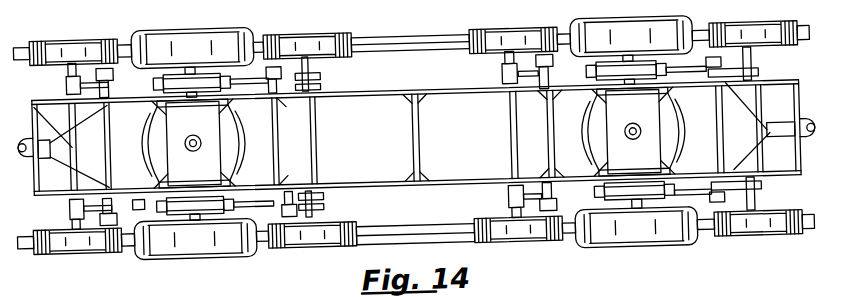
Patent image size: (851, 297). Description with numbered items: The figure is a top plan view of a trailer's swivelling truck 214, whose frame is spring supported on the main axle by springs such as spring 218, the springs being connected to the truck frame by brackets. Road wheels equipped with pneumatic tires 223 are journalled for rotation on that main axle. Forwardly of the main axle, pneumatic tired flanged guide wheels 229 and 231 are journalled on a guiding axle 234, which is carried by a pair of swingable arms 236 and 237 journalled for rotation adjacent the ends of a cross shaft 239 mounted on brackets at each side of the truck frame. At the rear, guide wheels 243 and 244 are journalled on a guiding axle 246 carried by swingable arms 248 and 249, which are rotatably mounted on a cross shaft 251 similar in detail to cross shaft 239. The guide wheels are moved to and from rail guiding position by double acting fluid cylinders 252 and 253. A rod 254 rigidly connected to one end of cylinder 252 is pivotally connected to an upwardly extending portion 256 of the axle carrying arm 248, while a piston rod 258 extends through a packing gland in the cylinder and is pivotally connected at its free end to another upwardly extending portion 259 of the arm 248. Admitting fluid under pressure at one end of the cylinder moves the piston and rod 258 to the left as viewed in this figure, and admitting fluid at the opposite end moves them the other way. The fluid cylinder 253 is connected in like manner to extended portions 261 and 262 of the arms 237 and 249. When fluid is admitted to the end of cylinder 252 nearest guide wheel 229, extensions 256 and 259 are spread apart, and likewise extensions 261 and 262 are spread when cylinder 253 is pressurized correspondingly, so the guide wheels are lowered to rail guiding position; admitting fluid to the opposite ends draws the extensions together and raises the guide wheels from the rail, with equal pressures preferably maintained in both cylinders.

The swivelling truck 214 is at (251, 92).
The spring 218 is at (129, 87).
The pneumatic tire 223 is at (175, 48).
The flanged guide wheel 229 is at (312, 232).
The flanged guide wheel 231 is at (311, 32).
The guiding axle 234 is at (318, 148).
The swingable arm 236 is at (321, 199).
The swingable arm 237 is at (324, 74).
The cross shaft 239 is at (313, 144).
The rear guide wheel 243 is at (67, 230).
The rear guide wheel 244 is at (42, 40).
The guiding axle 246 is at (79, 131).
The swingable arm 248 is at (80, 200).
The swingable arm 249 is at (74, 77).
The cross shaft 251 is at (151, 158).
The double acting fluid cylinder 252 is at (183, 194).
The double acting fluid cylinder 253 is at (200, 79).
The rod 254 is at (253, 198).
The upwardly extending portion 256 is at (286, 189).
The piston rod 258 is at (136, 197).
The upwardly extending portion 259 is at (110, 212).
The extended portion 261 is at (284, 96).
The extended portion 262 is at (109, 65).